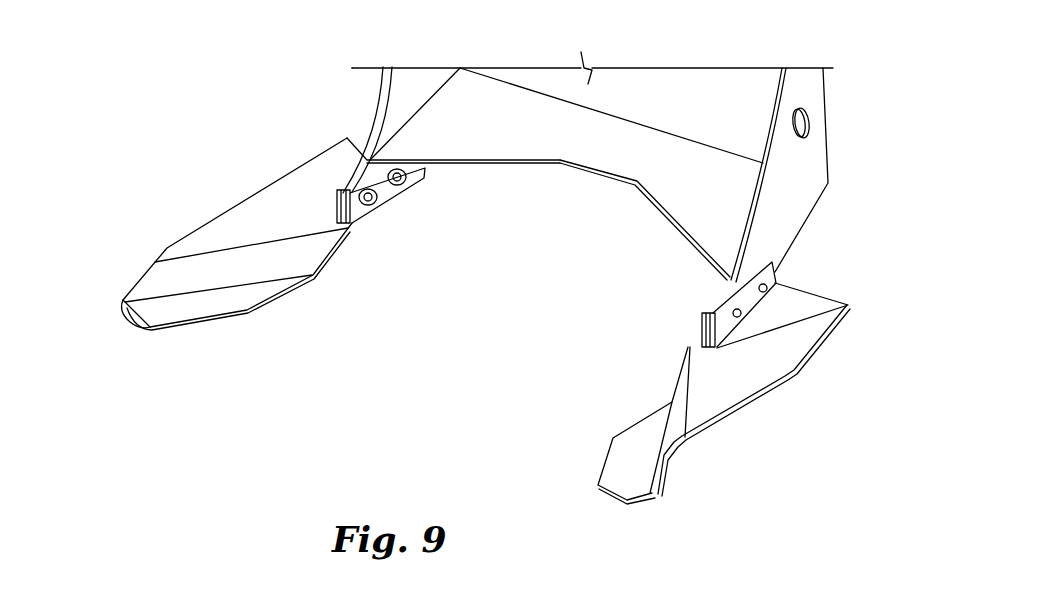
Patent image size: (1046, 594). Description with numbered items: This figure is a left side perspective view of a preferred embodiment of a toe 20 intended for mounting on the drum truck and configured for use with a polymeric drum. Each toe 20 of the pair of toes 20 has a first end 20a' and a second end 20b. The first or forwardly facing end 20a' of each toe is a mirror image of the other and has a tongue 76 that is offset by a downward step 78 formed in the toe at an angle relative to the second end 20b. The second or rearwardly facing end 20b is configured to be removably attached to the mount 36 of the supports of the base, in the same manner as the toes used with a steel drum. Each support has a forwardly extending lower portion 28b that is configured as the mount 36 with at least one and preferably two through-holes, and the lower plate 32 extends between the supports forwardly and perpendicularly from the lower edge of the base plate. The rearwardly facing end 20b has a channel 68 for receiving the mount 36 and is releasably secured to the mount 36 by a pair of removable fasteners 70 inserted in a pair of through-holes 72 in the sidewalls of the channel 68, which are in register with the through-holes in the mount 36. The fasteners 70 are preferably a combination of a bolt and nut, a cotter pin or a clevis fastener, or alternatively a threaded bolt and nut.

The toe 20 is at (182, 104).
The lower portion 28b is at (381, 98).
The lower plate 32 is at (598, 163).
The second end 20b is at (335, 157).
The first end 20a' is at (475, 317).
The downward step 78 is at (320, 248).
The tongue 76 is at (150, 313).
The mount 36 is at (337, 188).
The channel 68 is at (378, 214).
The removable fastener 70 is at (392, 195).
The through-hole 72 is at (768, 290).